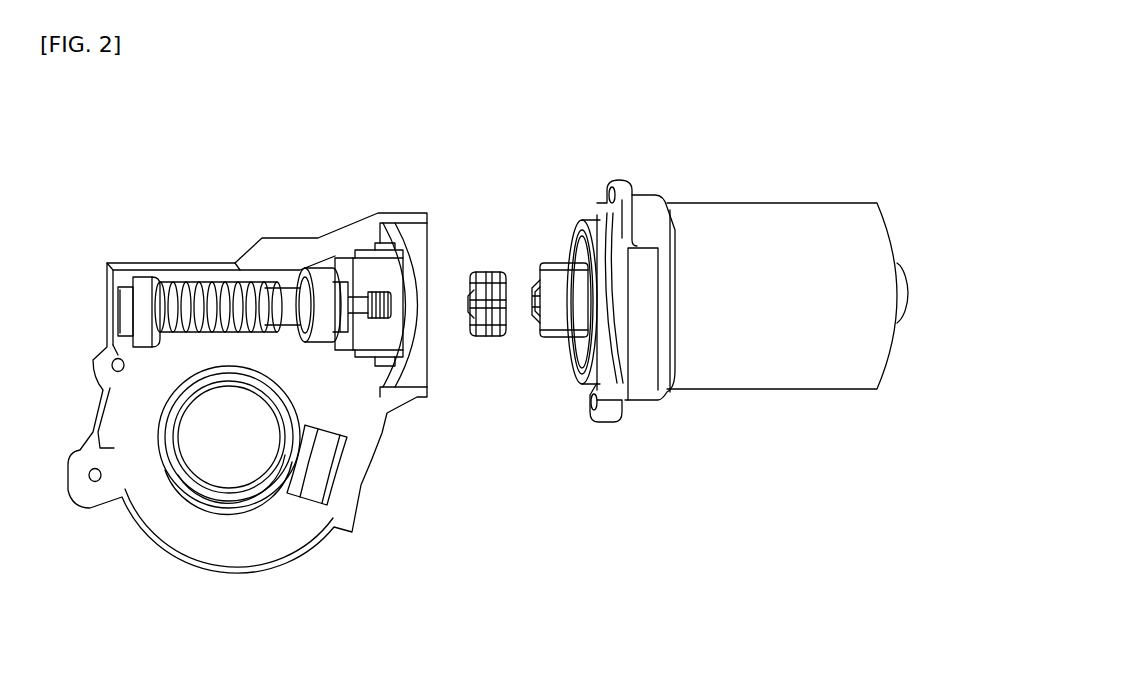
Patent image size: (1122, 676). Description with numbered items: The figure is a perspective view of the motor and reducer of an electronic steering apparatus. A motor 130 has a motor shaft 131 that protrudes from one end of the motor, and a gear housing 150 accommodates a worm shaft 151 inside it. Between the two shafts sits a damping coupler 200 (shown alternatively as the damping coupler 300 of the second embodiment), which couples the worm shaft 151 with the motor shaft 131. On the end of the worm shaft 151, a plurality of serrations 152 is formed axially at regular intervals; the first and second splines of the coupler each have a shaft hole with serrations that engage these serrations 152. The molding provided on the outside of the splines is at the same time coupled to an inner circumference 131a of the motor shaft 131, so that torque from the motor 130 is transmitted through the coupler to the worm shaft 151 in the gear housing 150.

The gear housing 150 is at (205, 240).
The worm shaft 151 is at (297, 292).
The serrations 152 is at (377, 289).
The motor 130 is at (692, 190).
The motor shaft 131 is at (563, 276).
The inner circumference 131a is at (531, 276).
The damping coupler 200 is at (523, 370).
The damping coupler 300 is at (495, 350).